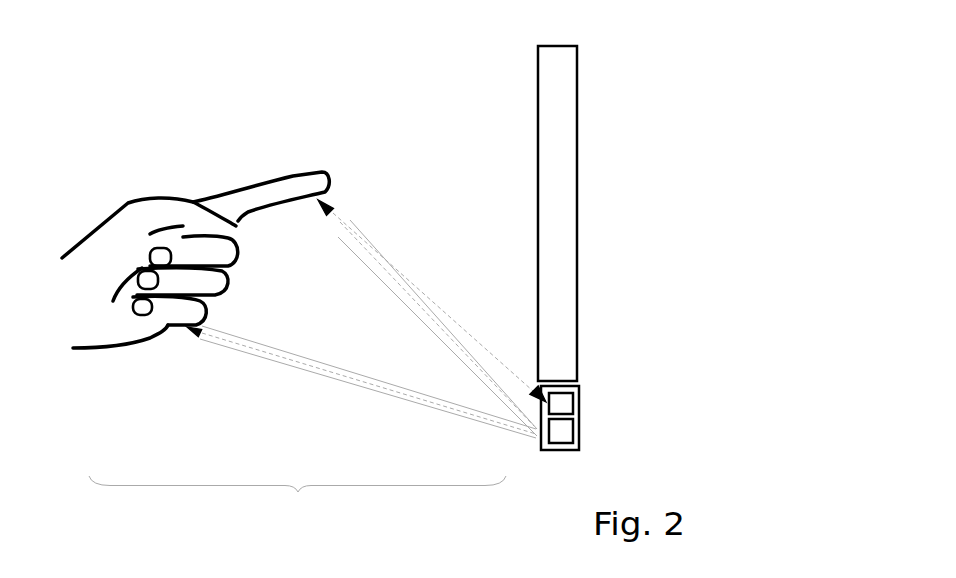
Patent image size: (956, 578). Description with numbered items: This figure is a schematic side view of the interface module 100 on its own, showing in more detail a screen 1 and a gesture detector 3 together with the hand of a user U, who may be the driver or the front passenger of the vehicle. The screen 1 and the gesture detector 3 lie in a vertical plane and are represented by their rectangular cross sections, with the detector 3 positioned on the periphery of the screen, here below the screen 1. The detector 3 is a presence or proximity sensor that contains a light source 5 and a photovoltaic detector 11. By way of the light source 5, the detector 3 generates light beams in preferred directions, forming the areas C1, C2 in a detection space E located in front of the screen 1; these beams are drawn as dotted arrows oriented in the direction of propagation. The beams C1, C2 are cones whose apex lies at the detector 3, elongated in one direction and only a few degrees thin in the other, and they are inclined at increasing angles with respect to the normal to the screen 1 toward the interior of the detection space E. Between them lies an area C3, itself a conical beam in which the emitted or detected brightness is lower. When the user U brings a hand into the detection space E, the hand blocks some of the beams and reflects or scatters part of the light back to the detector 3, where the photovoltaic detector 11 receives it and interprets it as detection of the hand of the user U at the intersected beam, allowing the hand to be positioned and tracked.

The interface module 100 is at (692, 263).
The screen 1 is at (557, 213).
The gesture detector 3 is at (606, 391).
The photovoltaic detector 11 is at (579, 403).
The light source 5 is at (579, 428).
The user U is at (87, 230).
The detection space E is at (297, 506).
The first area / beam C1 is at (432, 317).
The second area / beam C2 is at (361, 382).
The intermediate area C3 is at (344, 326).